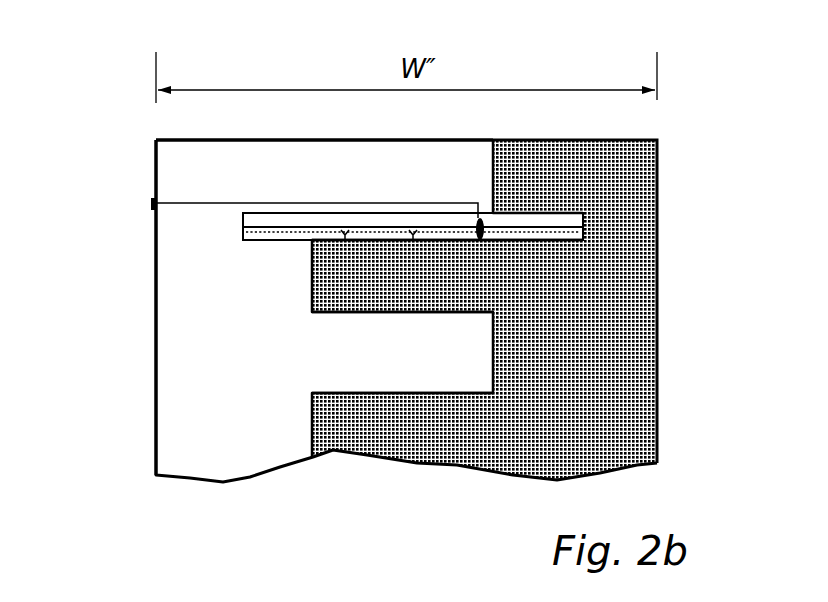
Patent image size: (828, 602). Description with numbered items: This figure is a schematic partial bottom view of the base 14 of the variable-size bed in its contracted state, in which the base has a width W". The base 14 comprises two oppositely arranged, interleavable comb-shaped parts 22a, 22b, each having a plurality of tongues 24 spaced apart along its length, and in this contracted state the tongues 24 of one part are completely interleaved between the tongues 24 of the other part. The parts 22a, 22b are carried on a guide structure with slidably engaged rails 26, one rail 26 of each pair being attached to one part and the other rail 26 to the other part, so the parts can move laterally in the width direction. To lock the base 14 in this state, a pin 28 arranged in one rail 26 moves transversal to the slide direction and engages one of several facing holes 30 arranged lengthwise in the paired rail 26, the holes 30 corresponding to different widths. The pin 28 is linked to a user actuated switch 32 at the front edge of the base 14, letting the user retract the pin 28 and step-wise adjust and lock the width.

The base 14 is at (121, 291).
The comb-shaped part 22a is at (300, 166).
The comb-shaped part 22b is at (600, 167).
The tongues 24 is at (395, 175).
The rails 26 is at (586, 220).
The pin 28 is at (480, 239).
The holes 30 is at (413, 237).
The switch 32 is at (152, 203).